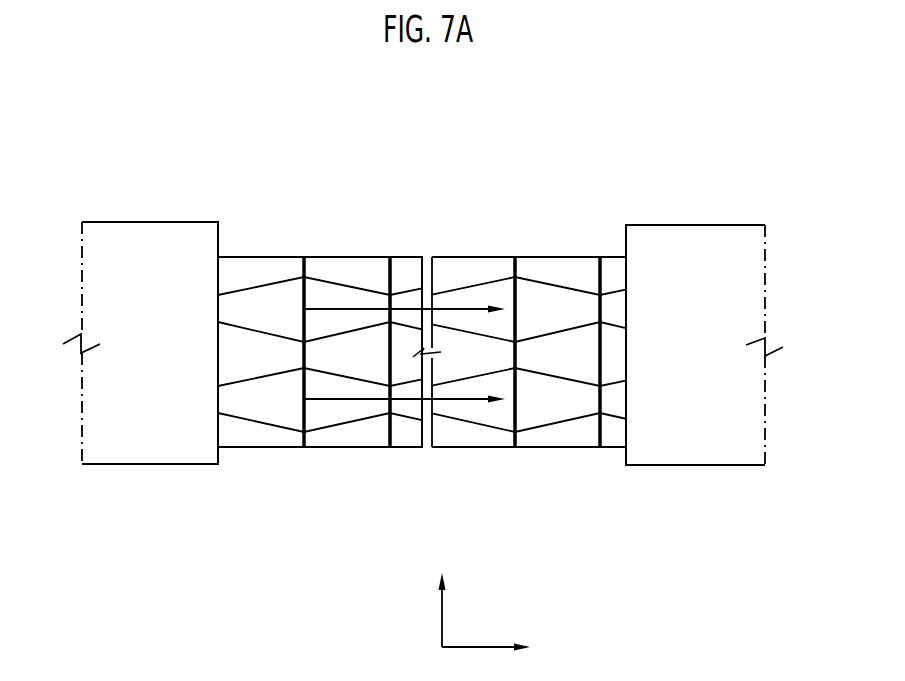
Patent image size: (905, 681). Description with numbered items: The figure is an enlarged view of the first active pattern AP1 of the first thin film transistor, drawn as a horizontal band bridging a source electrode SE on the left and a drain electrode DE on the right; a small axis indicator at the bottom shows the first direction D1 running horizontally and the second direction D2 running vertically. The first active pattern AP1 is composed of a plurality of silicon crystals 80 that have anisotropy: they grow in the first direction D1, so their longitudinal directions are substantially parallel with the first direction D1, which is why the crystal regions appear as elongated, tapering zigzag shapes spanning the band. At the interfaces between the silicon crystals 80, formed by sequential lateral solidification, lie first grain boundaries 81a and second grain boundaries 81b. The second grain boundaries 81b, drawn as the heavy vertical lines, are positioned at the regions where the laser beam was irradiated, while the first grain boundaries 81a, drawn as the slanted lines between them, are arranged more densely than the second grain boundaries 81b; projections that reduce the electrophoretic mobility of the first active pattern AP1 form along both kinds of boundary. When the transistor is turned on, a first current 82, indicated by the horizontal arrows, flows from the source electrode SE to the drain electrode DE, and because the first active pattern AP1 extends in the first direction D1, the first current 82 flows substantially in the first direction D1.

The source electrode SE is at (138, 237).
The drain electrode DE is at (682, 237).
The first active pattern AP1 is at (422, 320).
The silicon crystals 80 is at (323, 277).
The first grain boundaries 81a is at (252, 287).
The second grain boundaries 81b is at (303, 323).
The first current 82 is at (457, 308).
The first direction D1 is at (496, 648).
The second direction D2 is at (442, 595).